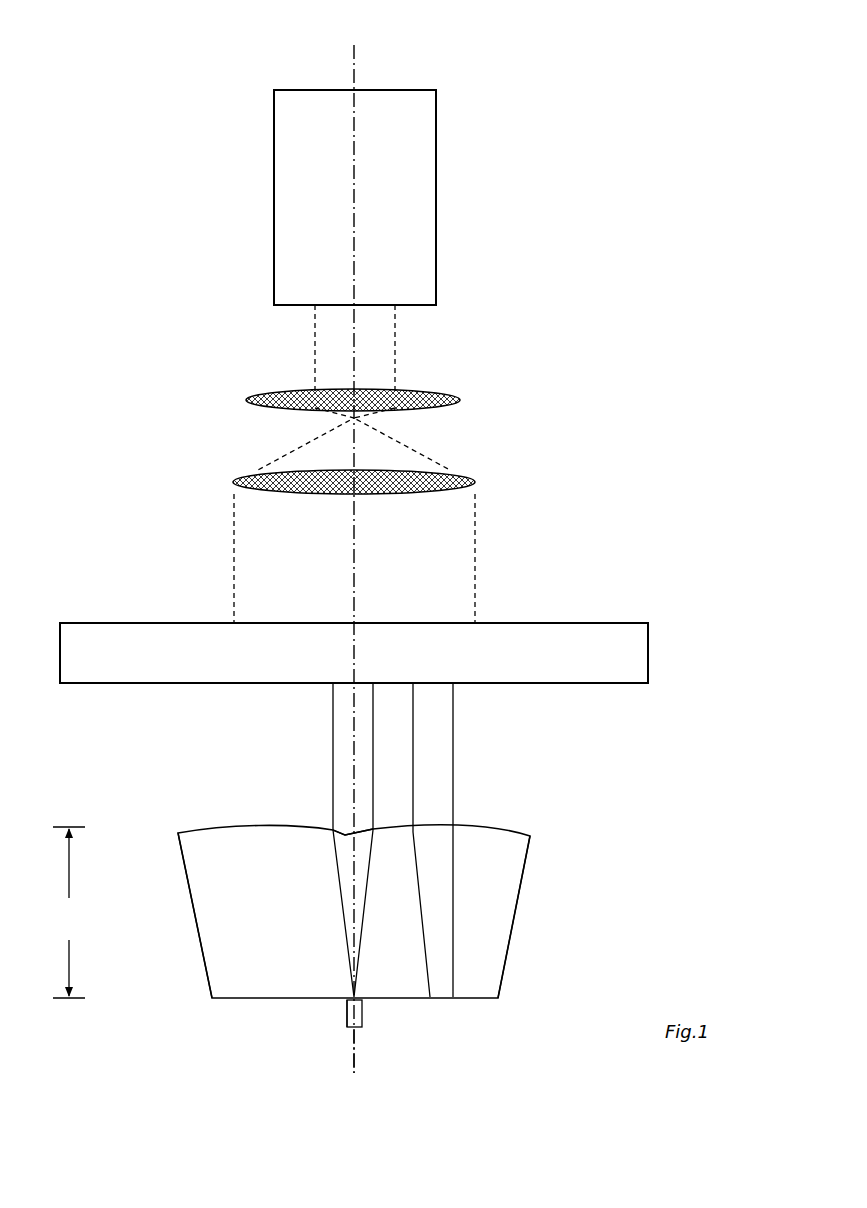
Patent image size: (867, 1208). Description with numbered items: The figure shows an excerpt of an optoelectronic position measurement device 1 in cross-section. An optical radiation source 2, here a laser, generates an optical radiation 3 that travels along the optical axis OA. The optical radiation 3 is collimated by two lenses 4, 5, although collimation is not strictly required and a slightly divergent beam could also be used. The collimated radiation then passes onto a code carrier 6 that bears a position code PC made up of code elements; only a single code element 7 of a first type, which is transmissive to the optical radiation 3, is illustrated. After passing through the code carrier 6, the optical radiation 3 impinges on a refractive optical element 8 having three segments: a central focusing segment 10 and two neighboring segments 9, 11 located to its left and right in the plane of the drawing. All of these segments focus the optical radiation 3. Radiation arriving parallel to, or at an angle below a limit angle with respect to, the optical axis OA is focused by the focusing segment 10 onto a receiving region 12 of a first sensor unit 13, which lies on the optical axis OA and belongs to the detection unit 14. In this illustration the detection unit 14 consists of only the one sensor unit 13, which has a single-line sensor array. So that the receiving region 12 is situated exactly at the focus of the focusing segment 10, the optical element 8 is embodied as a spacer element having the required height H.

The optical axis OA is at (355, 61).
The position measurement device 1 is at (686, 280).
The optical radiation source 2 is at (437, 153).
The optical radiation 3 is at (396, 358).
The lens 4 is at (460, 399).
The lens 5 is at (476, 483).
The code carrier 6 is at (652, 640).
The code element 7 is at (541, 637).
The position code PC is at (594, 641).
The refractive optical element 8 is at (534, 834).
The neighboring segment 9 is at (244, 889).
The central focusing segment 10 is at (333, 833).
The neighboring segment 11 is at (508, 892).
The receiving region 12 is at (362, 1012).
The first sensor unit 13 is at (347, 1012).
The detection unit 14 is at (357, 1036).
The height H is at (69, 912).